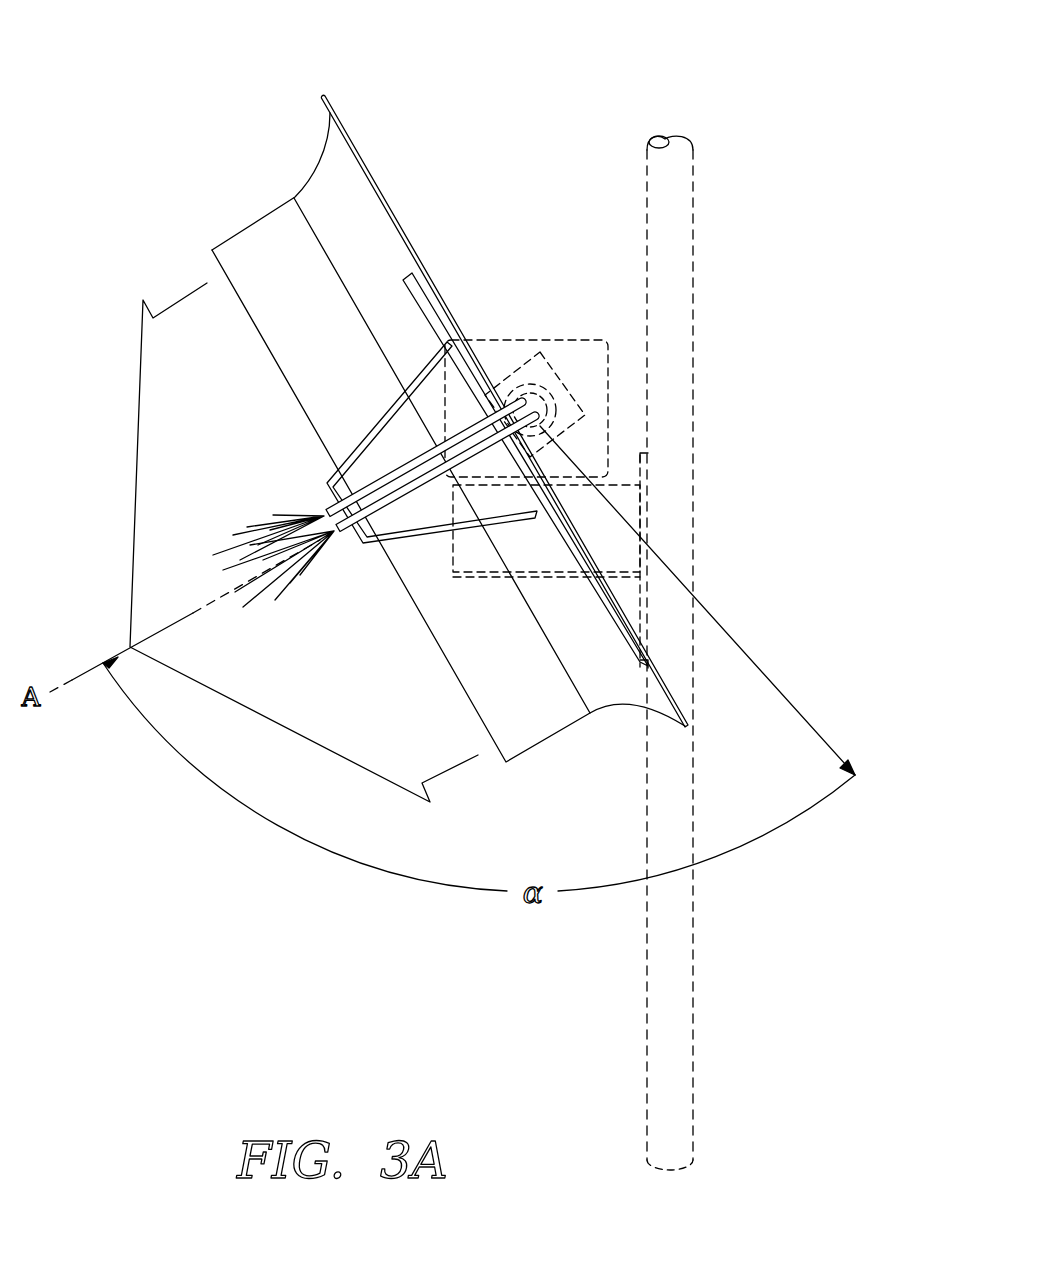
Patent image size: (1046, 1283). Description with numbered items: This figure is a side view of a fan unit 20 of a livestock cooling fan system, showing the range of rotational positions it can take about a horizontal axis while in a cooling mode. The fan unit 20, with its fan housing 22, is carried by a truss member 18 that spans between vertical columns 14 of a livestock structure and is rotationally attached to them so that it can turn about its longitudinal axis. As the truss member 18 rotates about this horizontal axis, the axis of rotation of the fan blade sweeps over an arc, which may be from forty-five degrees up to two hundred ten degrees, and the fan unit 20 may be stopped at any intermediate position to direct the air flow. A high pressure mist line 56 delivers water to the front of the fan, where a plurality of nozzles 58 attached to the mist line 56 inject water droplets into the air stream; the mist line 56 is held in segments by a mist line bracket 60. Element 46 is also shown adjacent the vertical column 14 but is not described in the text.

The vertical column 14 is at (653, 970).
The truss member 18 is at (546, 358).
The fan unit 20 is at (208, 194).
The fan housing 22 is at (352, 214).
The clamp 46 is at (625, 498).
The mist line 56 is at (396, 468).
The nozzle 58 is at (334, 537).
The mist line bracket 60 is at (381, 428).